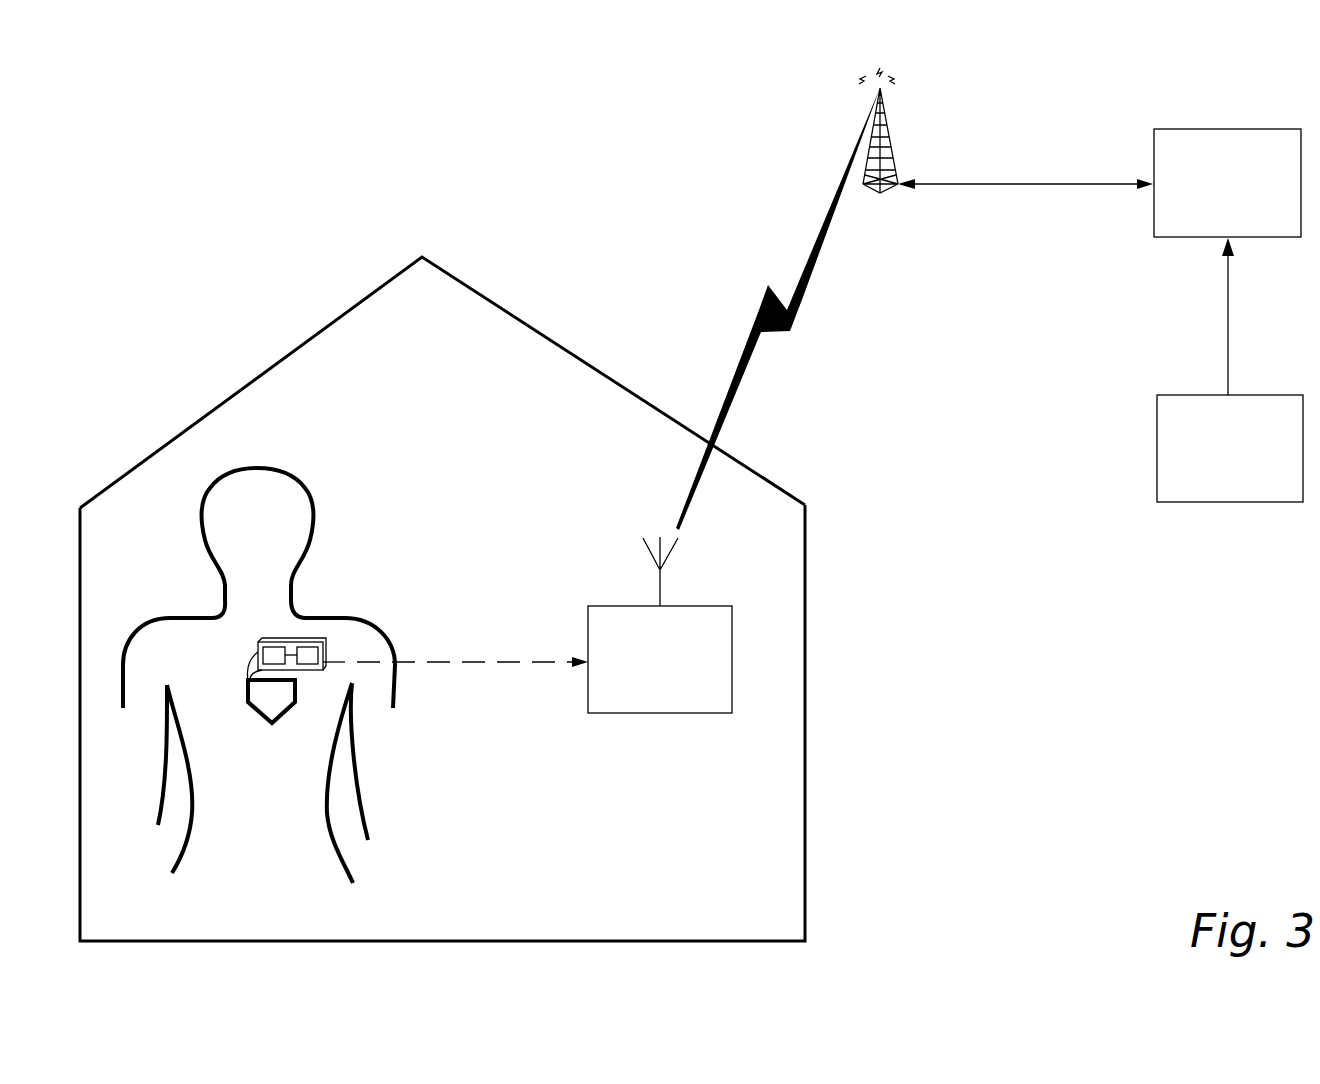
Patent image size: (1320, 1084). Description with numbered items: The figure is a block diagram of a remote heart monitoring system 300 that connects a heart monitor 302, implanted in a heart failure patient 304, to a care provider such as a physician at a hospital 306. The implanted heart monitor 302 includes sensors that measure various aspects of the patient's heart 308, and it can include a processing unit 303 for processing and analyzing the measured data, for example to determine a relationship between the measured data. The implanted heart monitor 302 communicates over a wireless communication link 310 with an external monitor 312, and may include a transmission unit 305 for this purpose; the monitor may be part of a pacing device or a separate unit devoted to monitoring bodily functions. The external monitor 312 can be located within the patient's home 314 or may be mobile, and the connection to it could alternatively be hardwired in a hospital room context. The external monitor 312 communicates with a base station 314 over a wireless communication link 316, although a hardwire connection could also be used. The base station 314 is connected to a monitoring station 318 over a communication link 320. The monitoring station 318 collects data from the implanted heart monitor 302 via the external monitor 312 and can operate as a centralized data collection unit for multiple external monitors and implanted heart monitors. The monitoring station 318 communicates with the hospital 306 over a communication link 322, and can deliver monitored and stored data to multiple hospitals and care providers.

The remote heart monitoring system 300 is at (452, 141).
The heart monitor 302 is at (272, 640).
The processing unit 303 is at (287, 667).
The heart failure patient 304 is at (288, 522).
The transmission unit 305 is at (322, 642).
The hospital 306 is at (1192, 413).
The heart 308 is at (280, 707).
The wireless communication link 310 is at (455, 662).
The external monitor 312 is at (718, 692).
The base station 314 is at (880, 193).
The wireless communication link 316 is at (757, 343).
The monitoring station 318 is at (1187, 225).
The communication link 320 is at (980, 185).
The communication link 322 is at (1228, 341).